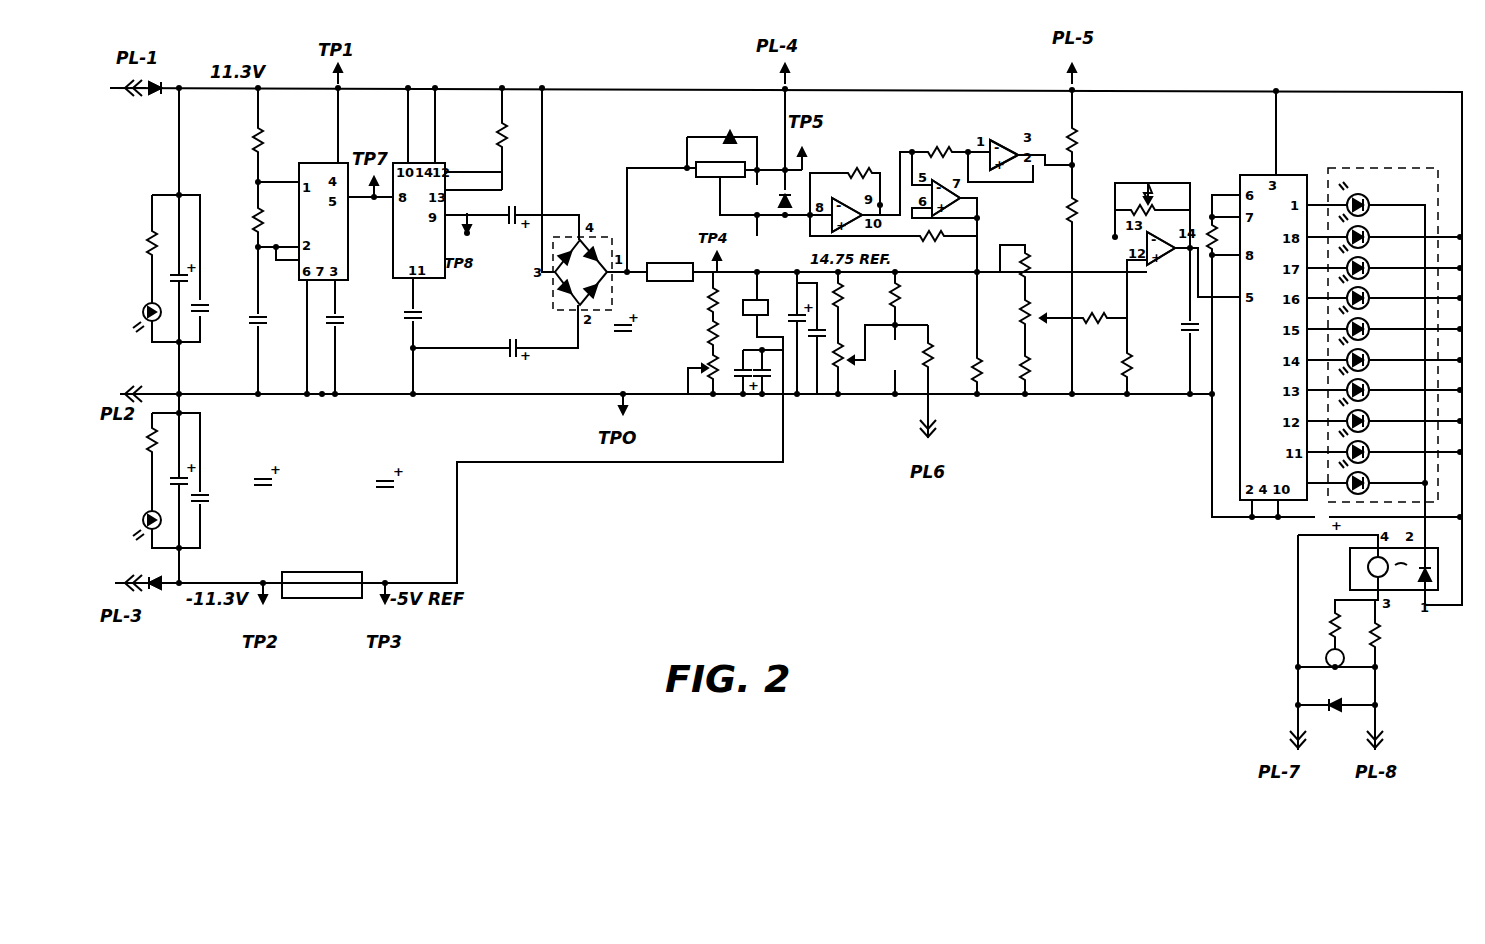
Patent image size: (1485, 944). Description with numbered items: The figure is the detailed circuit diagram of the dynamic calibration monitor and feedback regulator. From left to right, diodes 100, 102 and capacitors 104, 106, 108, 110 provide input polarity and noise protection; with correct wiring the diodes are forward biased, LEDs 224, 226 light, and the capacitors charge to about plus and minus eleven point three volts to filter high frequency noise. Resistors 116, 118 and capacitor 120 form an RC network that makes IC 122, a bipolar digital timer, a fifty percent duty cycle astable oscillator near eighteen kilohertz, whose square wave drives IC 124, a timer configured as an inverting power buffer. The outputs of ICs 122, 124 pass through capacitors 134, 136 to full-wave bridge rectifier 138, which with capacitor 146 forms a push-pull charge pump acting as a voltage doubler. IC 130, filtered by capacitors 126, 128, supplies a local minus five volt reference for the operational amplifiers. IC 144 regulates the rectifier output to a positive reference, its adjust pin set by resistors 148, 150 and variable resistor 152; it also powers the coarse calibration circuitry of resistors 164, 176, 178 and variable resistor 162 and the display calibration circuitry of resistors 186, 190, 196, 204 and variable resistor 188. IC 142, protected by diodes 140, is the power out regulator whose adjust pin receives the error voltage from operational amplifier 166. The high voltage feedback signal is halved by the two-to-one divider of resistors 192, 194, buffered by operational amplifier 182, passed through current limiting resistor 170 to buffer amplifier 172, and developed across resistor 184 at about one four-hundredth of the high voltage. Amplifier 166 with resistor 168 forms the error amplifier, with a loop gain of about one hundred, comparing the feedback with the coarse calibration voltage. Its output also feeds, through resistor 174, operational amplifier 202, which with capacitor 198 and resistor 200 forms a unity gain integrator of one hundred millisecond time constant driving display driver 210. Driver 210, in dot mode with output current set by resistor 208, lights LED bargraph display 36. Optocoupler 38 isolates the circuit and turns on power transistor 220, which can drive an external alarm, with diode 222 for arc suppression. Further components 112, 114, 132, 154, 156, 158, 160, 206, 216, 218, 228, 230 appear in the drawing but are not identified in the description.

The light emitting diode bargraph display 36 is at (1374, 164).
The optocoupler 38 is at (1355, 572).
The diode 100 is at (152, 100).
The diode 102 is at (160, 590).
The capacitor 104 is at (168, 278).
The capacitor 106 is at (168, 478).
The capacitor 108 is at (226, 298).
The capacitor 110 is at (212, 500).
The resistor 112 is at (148, 240).
The resistor 114 is at (148, 438).
The resistor 116 is at (253, 142).
The resistor 118 is at (253, 222).
The capacitor 120 is at (270, 318).
The integrated circuit 122 is at (304, 282).
The integrated circuit 124 is at (420, 284).
The capacitor 126 is at (254, 492).
The capacitor 128 is at (396, 484).
The integrated circuit 130 is at (330, 600).
The resistor 132 is at (498, 138).
The capacitor 134 is at (508, 228).
The capacitor 136 is at (504, 356).
The full-wave rectifier 138 is at (555, 312).
The diodes 140 is at (730, 132).
The integrated circuit 142 is at (696, 186).
The integrated circuit 144 is at (682, 258).
The capacitor 146 is at (610, 330).
The resistor 148 is at (709, 296).
The resistor 150 is at (706, 330).
The variable resistor 152 is at (686, 357).
The capacitor 154 is at (730, 400).
The thermistor 156 is at (770, 398).
The lead 158 is at (782, 314).
The capacitor 160 is at (790, 340).
The variable resistor 162 is at (824, 352).
The resistor 164 is at (844, 298).
The operational amplifier 166 is at (868, 156).
The resistor 168 is at (850, 170).
The current limiting resistor 170 is at (938, 148).
The operational amplifier 172 is at (961, 216).
The resistor 174 is at (926, 240).
The resistor 176 is at (900, 300).
The resistor 178 is at (890, 400).
The operational amplifier 182 is at (1002, 135).
The resistor 184 is at (968, 364).
The resistor 186 is at (1038, 262).
The variable resistor 188 is at (1024, 316).
The resistor 190 is at (1020, 386).
The resistor 192 is at (1080, 144).
The resistor 194 is at (1066, 212).
The resistor 196 is at (1092, 320).
The capacitor 198 is at (1148, 178).
The resistor 200 is at (1116, 206).
The operational amplifier 202 is at (1138, 268).
The resistor 204 is at (1134, 372).
The capacitor 206 is at (1178, 330).
The resistor 208 is at (1205, 230).
The display driver 210 is at (1230, 448).
The resistor 216 is at (1328, 618).
The resistor 218 is at (1382, 630).
The power transistor 220 is at (1328, 662).
The diode 222 is at (1335, 712).
The light emitting diode 224 is at (158, 340).
The light emitting diode 226 is at (158, 548).
The capacitor 228 is at (348, 318).
The capacitor 230 is at (424, 315).